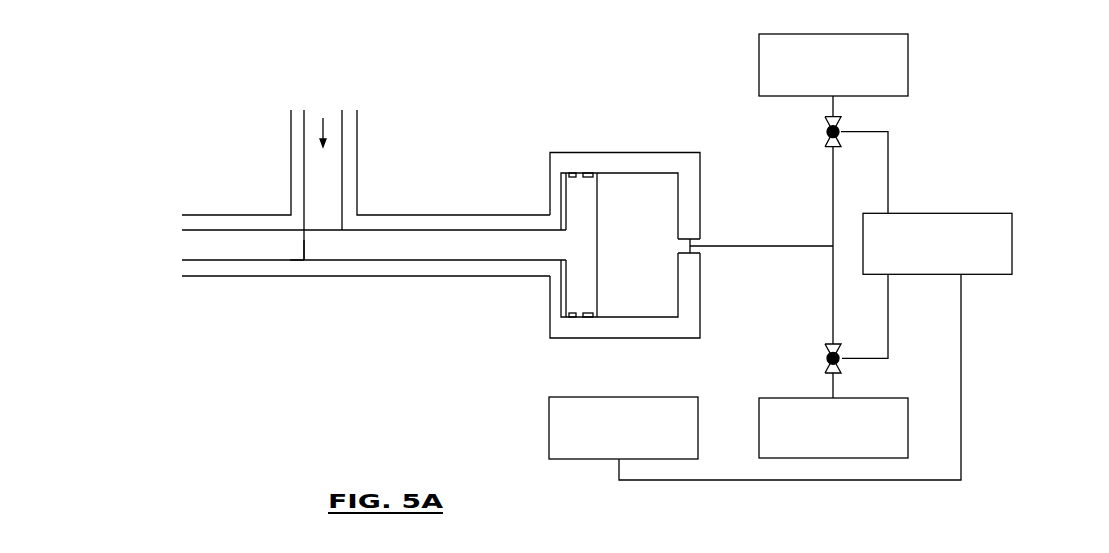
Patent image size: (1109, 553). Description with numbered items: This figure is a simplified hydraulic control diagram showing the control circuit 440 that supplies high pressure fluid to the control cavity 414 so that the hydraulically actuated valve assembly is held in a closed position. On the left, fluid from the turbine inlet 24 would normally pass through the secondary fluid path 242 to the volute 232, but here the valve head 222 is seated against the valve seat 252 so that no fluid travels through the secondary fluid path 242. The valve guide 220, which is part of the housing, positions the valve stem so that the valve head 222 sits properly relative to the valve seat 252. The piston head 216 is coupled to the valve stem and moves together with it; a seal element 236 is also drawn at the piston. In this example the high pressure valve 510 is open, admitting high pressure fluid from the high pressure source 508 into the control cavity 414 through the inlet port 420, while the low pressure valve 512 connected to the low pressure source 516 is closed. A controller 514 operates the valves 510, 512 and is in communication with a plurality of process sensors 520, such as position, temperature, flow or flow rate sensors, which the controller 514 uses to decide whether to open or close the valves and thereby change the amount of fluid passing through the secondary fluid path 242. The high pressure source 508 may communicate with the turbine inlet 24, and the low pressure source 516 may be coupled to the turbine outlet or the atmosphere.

The turbine inlet 24 is at (334, 106).
The secondary fluid path 242 is at (338, 203).
The volute 232 is at (245, 256).
The valve seat 252 is at (303, 253).
The valve head 222 is at (302, 258).
The valve guide 220 is at (438, 215).
The piston head 216 is at (582, 190).
The lower seal 236 is at (561, 327).
The control cavity 414 is at (639, 198).
The inlet port 420 is at (697, 243).
The control circuit 440 is at (742, 118).
The high pressure source 508 is at (803, 34).
The high pressure valve 510 is at (825, 132).
The low pressure valve 512 is at (826, 358).
The controller 514 is at (942, 213).
The low pressure source 516 is at (858, 398).
The process sensors 520 is at (602, 397).